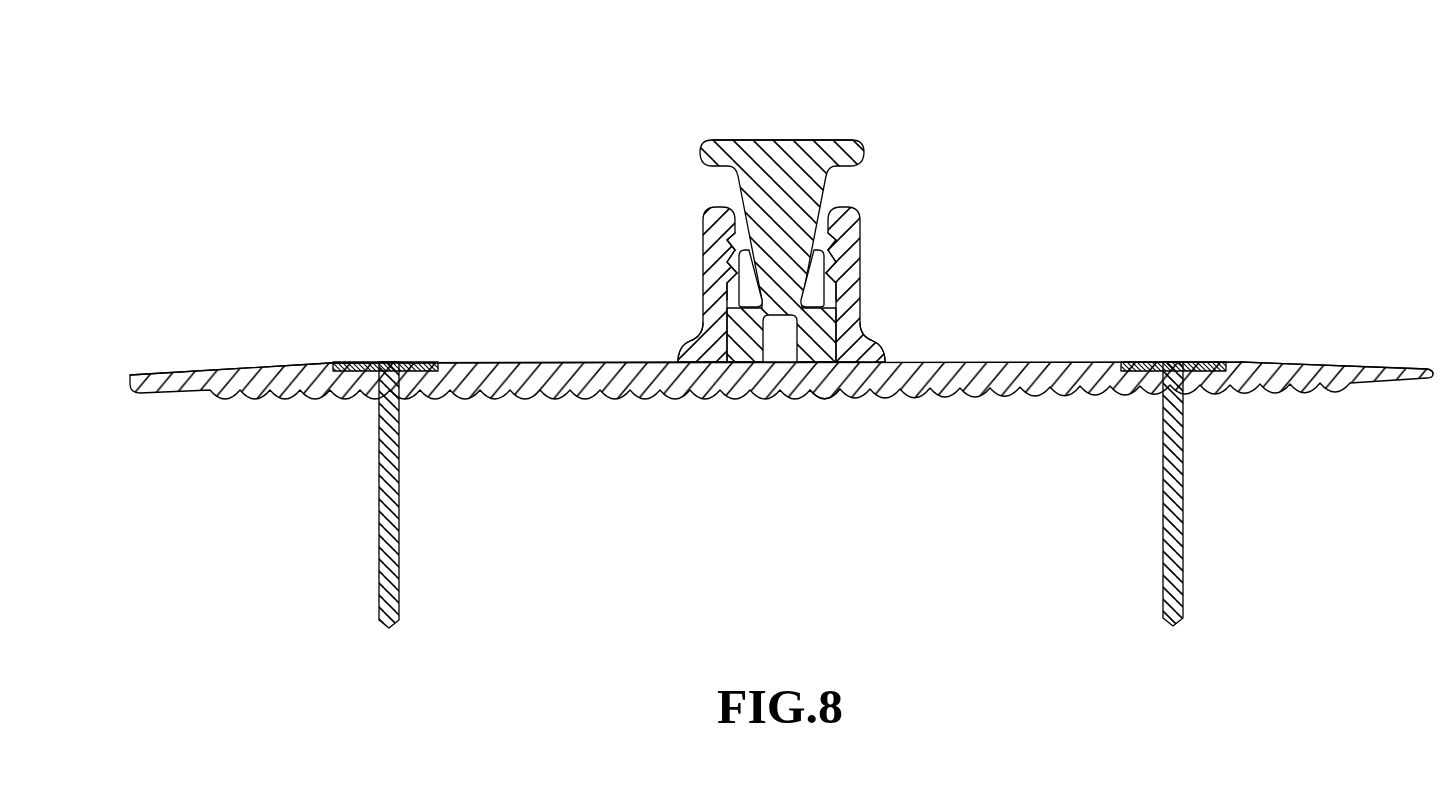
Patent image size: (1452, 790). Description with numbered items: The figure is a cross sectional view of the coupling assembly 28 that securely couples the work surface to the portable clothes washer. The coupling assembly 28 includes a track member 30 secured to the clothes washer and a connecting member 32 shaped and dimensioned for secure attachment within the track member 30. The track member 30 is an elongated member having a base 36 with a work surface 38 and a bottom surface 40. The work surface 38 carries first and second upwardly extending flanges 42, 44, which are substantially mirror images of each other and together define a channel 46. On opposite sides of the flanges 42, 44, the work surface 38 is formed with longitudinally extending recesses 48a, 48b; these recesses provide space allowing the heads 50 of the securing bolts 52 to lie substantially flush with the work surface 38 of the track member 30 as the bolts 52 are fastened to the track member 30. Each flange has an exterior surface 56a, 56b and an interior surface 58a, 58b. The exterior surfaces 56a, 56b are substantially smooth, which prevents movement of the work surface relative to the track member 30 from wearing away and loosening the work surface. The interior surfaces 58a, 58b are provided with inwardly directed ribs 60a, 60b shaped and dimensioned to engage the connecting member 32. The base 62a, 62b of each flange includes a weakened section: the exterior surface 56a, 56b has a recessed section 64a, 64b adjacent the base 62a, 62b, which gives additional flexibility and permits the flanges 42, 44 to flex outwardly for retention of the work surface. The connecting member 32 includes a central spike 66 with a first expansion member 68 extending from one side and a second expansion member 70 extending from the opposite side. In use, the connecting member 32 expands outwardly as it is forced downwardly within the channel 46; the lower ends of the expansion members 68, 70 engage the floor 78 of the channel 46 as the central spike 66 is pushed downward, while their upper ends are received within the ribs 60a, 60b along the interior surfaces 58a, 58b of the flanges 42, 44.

The coupling assembly 28 is at (412, 280).
The track member 30 is at (236, 370).
The connecting member 32 is at (781, 139).
The base 36 is at (1296, 365).
The work surface 38 is at (535, 362).
The bottom surface 40 is at (830, 385).
The first upwardly extending flange 42 is at (702, 300).
The second upwardly extending flange 44 is at (861, 257).
The channel 46 is at (767, 355).
The longitudinally extending recess 48a is at (333, 361).
The longitudinally extending recess 48b is at (1152, 361).
The head of securing bolt 50 is at (388, 362).
The securing bolt 52 is at (379, 575).
The exterior surface 56a is at (703, 303).
The exterior surface 56b is at (861, 277).
The interior surface 58a is at (703, 320).
The interior surface 58b is at (861, 313).
The inwardly directed rib 60a is at (703, 258).
The inwardly directed rib 60b is at (861, 213).
The base of flange 62a is at (718, 373).
The base of flange 62b is at (847, 392).
The recessed section 64a is at (703, 347).
The recessed section 64b is at (870, 352).
The central spike 66 is at (833, 141).
The first expansion member 68 is at (741, 352).
The second expansion member 70 is at (827, 352).
The floor of channel 78 is at (783, 350).